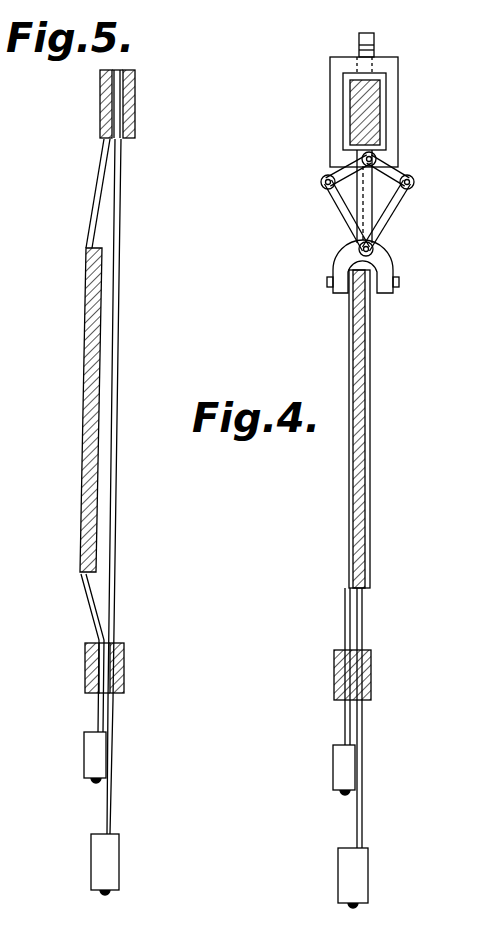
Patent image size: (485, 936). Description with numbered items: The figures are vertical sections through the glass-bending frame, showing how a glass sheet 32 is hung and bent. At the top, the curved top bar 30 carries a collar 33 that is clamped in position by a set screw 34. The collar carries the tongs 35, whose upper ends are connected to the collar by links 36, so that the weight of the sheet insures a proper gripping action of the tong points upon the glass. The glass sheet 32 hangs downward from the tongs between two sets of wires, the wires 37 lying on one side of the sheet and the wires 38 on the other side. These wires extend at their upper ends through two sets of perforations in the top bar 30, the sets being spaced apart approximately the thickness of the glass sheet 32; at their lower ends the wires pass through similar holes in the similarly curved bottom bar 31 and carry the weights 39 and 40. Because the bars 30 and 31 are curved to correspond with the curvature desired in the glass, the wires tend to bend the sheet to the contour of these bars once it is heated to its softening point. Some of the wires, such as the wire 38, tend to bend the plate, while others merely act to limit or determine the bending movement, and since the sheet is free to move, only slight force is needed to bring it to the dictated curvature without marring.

In FIG. 5, the curved top bar 30 is at (135, 107).
In FIG. 4, the curved top bar 30 is at (352, 110).
In FIG. 5, the curved bottom bar 31 is at (126, 668).
In FIG. 4, the curved bottom bar 31 is at (338, 672).
In FIG. 5, the glass sheet 32 is at (92, 300).
In FIG. 4, the glass sheet 32 is at (356, 395).
In FIG. 4, the collar 33 is at (390, 115).
In FIG. 4, the set screw 34 is at (376, 42).
In FIG. 4, the tongs 35 is at (388, 218).
In FIG. 4, the link 36 is at (395, 170).
In FIG. 5, the wire 37 is at (116, 604).
In FIG. 4, the wire 37 is at (363, 633).
In FIG. 5, the wire 38 is at (83, 592).
In FIG. 4, the wire 38 is at (345, 633).
In FIG. 5, the weight 39 is at (107, 860).
In FIG. 4, the weight 39 is at (355, 880).
In FIG. 5, the weight 40 is at (92, 756).
In FIG. 4, the weight 40 is at (343, 768).